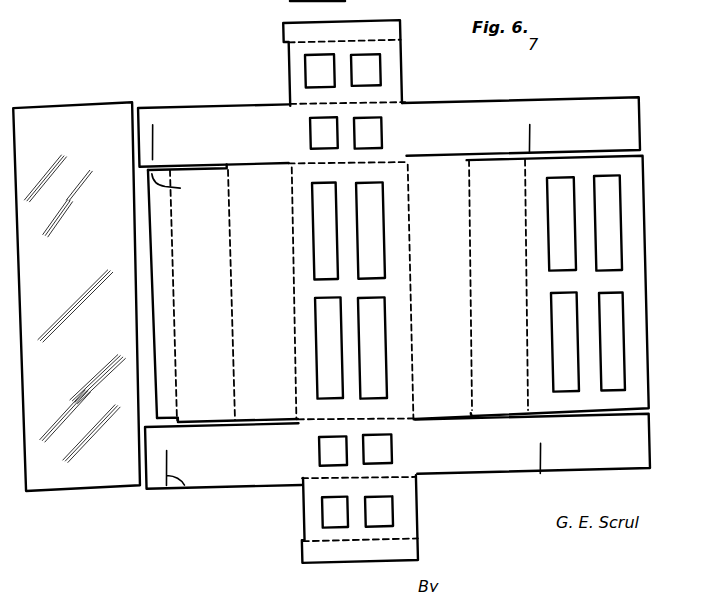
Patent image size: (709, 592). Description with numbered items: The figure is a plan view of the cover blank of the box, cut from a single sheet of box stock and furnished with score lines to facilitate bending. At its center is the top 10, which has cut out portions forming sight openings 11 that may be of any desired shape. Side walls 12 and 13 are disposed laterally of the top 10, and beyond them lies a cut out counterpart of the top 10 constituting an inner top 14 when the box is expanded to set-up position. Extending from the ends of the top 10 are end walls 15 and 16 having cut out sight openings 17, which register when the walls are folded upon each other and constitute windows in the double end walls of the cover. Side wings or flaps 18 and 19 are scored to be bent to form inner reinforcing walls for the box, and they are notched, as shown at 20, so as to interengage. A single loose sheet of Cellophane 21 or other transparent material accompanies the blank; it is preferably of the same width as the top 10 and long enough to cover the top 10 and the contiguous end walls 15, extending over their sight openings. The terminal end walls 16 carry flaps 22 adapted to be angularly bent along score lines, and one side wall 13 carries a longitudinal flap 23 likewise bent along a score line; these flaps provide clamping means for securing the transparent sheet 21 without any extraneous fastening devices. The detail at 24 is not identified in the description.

The top 10 is at (401, 243).
The sight openings 11 is at (382, 346).
The side wall 12 is at (248, 376).
The side wall 13 is at (205, 407).
The inner top 14 is at (635, 375).
The end wall 15 is at (409, 128).
The end wall 16 is at (401, 63).
The sight openings 17 is at (384, 126).
The side wing or flap 18 is at (505, 107).
The side wing or flap 19 is at (245, 112).
The notch 20 is at (162, 135).
The transparent sheet 21 is at (76, 463).
The flap 22 is at (392, 26).
The longitudinal flap 23 is at (158, 238).
The corner cut 24 is at (178, 194).